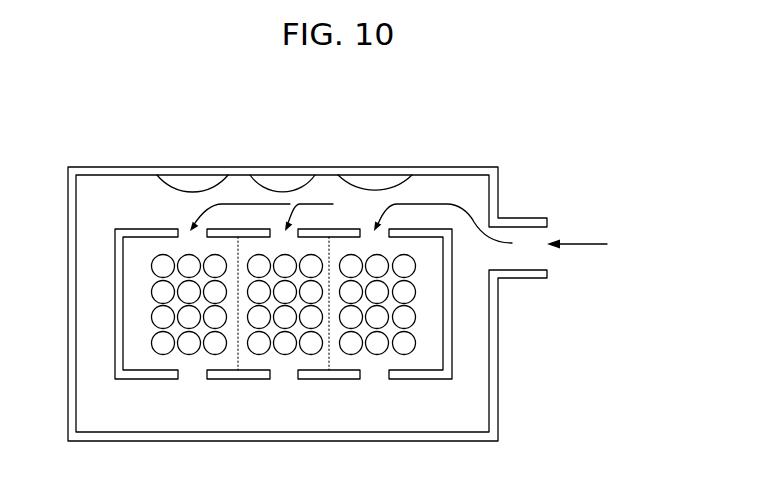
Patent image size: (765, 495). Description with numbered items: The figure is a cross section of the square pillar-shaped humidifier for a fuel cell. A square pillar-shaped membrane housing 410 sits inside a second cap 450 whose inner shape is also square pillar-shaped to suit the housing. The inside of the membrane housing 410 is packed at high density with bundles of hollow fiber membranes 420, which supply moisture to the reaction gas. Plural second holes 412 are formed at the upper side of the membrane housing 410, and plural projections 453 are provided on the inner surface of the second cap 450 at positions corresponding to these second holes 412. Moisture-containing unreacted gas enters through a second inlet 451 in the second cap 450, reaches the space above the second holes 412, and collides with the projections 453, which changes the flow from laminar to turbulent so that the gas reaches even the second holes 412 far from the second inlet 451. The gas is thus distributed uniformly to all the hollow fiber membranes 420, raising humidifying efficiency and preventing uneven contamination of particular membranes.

The membrane housing 410 is at (238, 231).
The second holes 412 is at (185, 231).
The hollow fiber membranes 420 is at (311, 264).
The second cap 450 is at (473, 167).
The second inlet 451 is at (537, 259).
The projections 453 is at (213, 183).